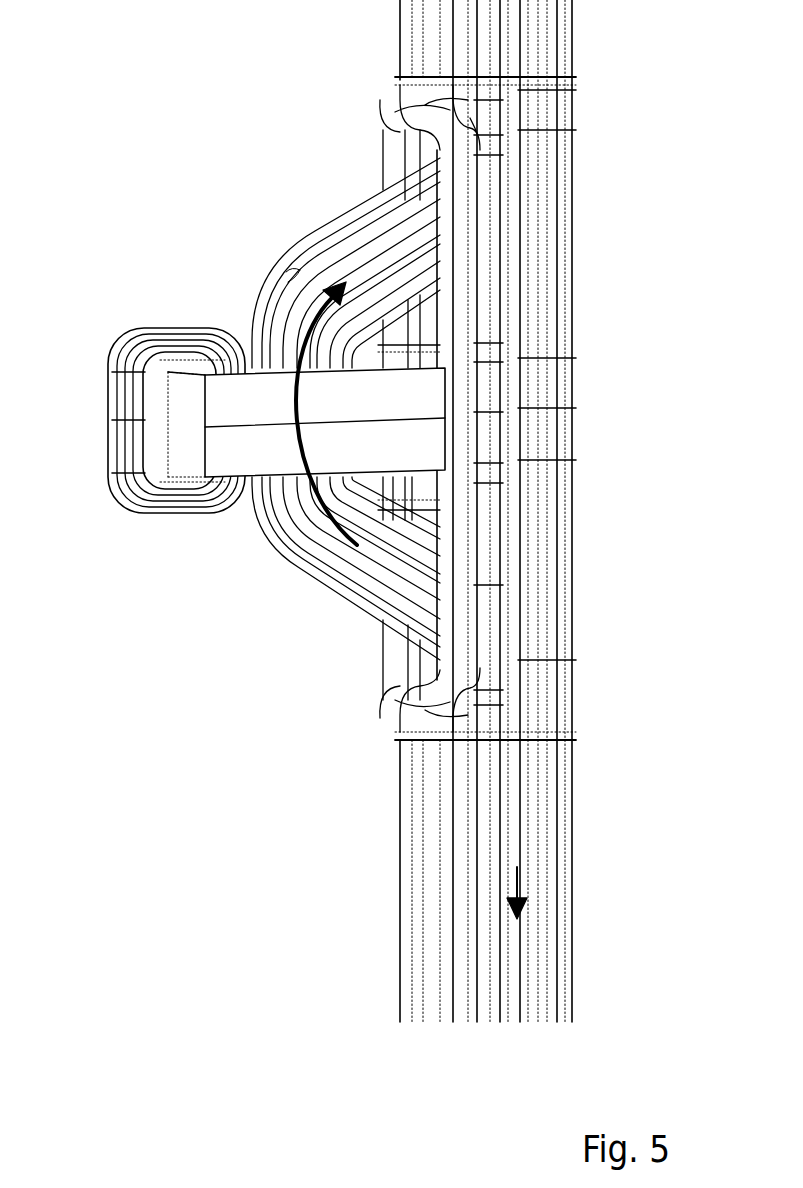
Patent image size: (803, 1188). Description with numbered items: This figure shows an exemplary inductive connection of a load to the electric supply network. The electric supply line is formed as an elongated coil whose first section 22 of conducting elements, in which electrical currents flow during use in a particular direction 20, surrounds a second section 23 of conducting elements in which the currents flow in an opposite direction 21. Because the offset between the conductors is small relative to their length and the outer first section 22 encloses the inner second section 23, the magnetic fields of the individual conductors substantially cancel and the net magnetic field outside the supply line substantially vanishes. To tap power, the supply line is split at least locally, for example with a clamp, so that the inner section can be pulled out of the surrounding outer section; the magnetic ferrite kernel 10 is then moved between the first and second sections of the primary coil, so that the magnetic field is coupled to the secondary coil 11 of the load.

The magnetic ferrite kernel 10 is at (248, 450).
The secondary coil 11 is at (112, 457).
The particular direction of current flow 20 is at (520, 867).
The opposite direction of current flow 21 is at (318, 317).
The first section of the coil 22 is at (545, 285).
The second section of the coil 23 is at (338, 237).